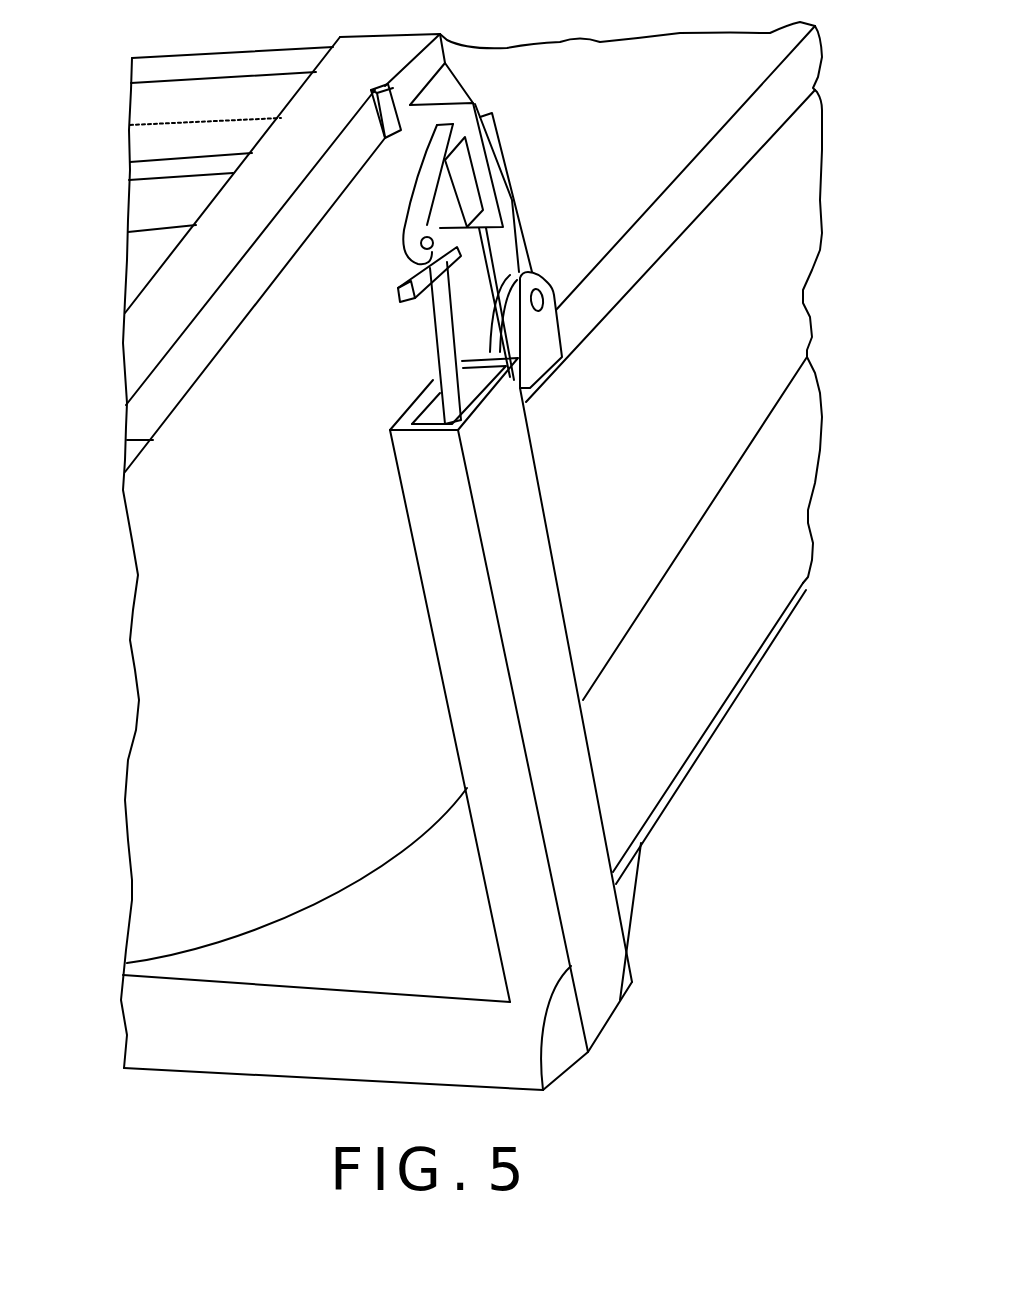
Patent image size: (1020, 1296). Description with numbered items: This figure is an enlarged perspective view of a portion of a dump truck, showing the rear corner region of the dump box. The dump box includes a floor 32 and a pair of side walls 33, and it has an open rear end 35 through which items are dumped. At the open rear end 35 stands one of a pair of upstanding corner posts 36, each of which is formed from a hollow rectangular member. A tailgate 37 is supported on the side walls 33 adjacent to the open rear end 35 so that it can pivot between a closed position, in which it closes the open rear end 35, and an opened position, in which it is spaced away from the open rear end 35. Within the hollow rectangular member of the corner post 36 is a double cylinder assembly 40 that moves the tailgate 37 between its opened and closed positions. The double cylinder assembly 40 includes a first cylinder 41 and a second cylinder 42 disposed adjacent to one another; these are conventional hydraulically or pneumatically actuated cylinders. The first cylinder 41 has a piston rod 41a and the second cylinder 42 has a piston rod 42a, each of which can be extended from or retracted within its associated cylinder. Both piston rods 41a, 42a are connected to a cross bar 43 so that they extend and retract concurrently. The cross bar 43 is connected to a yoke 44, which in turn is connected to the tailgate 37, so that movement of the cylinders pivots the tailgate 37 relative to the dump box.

The floor 32 is at (233, 861).
The side wall 33 is at (773, 374).
The open rear end 35 is at (247, 1050).
The corner post 36 is at (470, 727).
The tailgate 37 is at (202, 268).
The double cylinder assembly 40 is at (370, 403).
The first cylinder 41 is at (452, 423).
The piston rod 41a is at (437, 333).
The second cylinder 42 is at (485, 385).
The piston rod 42a is at (470, 282).
The cross bar 43 is at (412, 282).
The yoke 44 is at (432, 205).